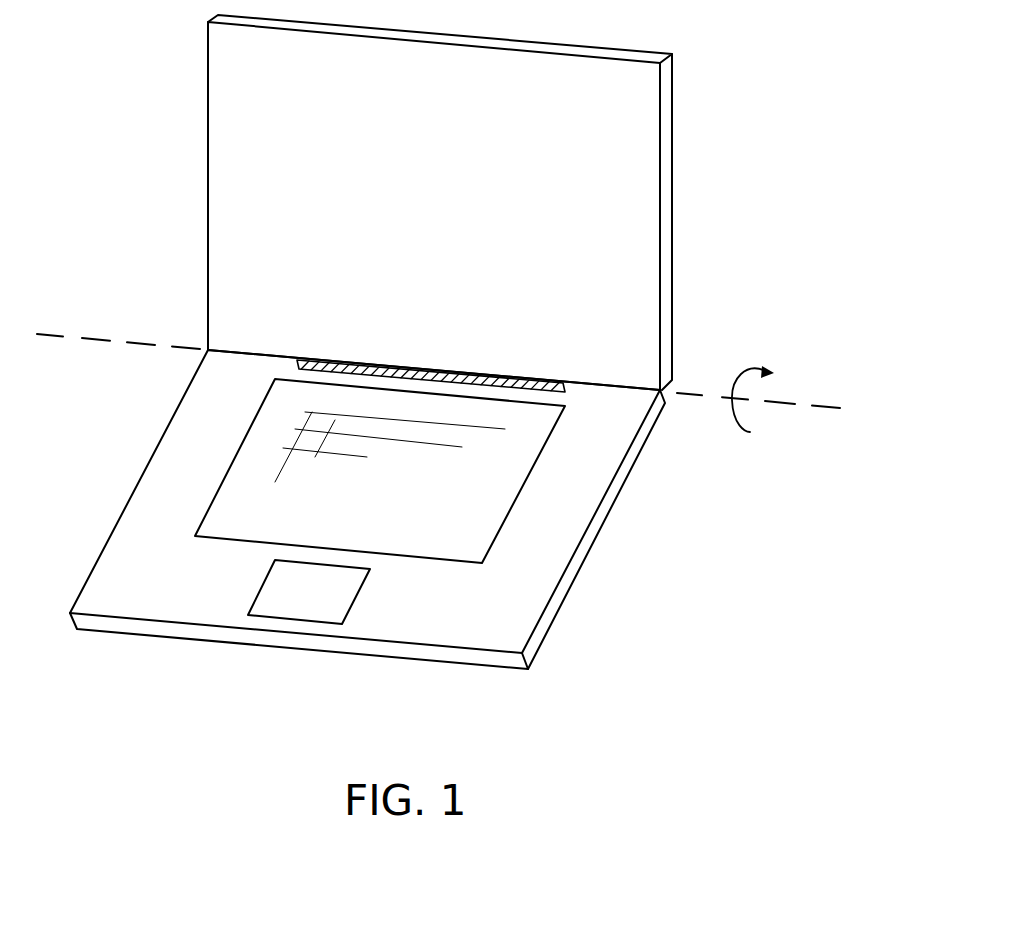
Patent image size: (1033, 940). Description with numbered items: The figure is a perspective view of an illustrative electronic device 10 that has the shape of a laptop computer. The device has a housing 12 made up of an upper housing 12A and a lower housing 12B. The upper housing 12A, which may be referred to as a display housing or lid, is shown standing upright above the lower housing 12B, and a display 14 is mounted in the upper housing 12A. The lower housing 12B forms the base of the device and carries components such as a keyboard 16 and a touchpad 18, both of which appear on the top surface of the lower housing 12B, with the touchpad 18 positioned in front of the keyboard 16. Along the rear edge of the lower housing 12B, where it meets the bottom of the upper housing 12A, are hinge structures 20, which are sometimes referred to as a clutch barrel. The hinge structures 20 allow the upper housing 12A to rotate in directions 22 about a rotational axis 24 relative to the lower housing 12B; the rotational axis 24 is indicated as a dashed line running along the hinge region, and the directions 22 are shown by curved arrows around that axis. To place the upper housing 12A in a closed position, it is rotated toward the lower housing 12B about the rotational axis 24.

The electronic device 10 is at (748, 53).
The housing 12 is at (401, 366).
The upper housing 12A is at (431, 202).
The lower housing 12B is at (380, 534).
The display 14 is at (580, 193).
The keyboard 16 is at (522, 488).
The touchpad 18 is at (355, 600).
The hinge structures 20 is at (533, 383).
The directions 22 is at (768, 426).
The rotational axis 24 is at (85, 337).